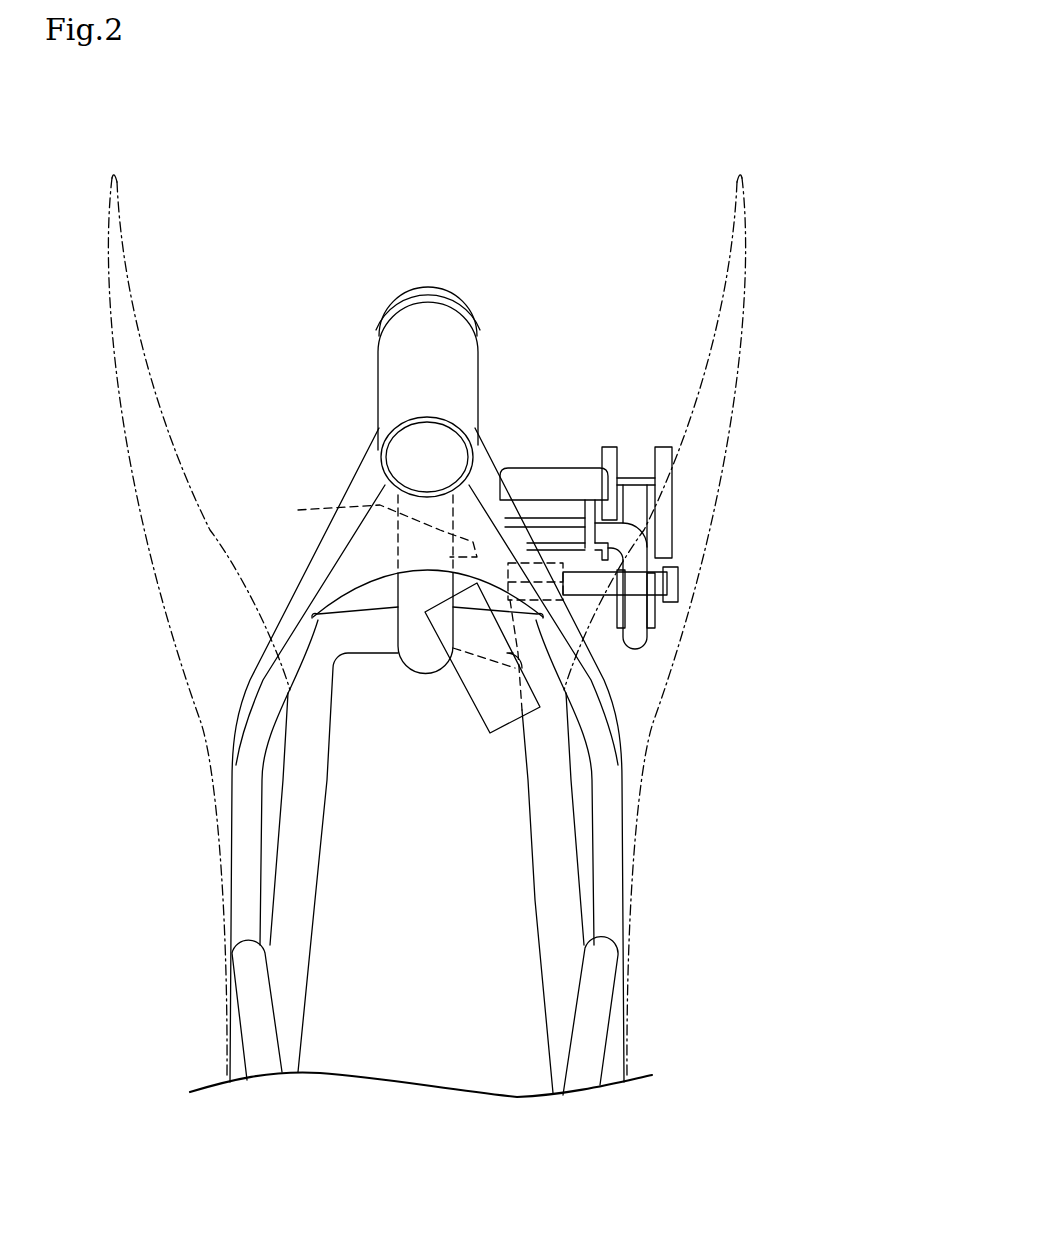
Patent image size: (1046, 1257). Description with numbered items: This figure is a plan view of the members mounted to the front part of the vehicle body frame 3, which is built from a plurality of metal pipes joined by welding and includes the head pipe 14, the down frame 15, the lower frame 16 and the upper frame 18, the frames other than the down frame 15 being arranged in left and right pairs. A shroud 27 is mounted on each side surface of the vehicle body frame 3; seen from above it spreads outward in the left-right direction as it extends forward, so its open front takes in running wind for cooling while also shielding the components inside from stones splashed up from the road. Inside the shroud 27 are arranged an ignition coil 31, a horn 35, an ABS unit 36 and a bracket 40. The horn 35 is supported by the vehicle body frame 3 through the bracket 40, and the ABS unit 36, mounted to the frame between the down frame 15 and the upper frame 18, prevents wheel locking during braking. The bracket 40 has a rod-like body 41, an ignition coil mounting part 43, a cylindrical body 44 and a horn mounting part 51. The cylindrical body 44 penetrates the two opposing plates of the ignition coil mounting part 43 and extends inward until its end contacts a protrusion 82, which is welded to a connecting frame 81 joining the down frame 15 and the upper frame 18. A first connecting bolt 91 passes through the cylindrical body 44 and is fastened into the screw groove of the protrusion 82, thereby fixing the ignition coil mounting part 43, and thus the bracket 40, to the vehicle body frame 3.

The vehicle body frame 3 is at (660, 832).
The head pipe 14 is at (385, 372).
The down frame 15 is at (398, 597).
The lower frame 16 is at (290, 858).
The upper frame 18 is at (350, 483).
The shroud 27 is at (120, 203).
The ignition coil 31 is at (665, 547).
The horn 35 is at (523, 473).
The ABS unit 36 is at (463, 680).
The bracket 40 is at (695, 502).
The rod-like body 41 is at (637, 645).
The ignition coil mounting part 43 is at (637, 483).
The cylindrical body 44 is at (657, 598).
The horn mounting part 51 is at (577, 520).
The connecting frame 81 is at (381, 576).
The protrusion 82 is at (567, 582).
The first connecting bolt 91 is at (672, 583).